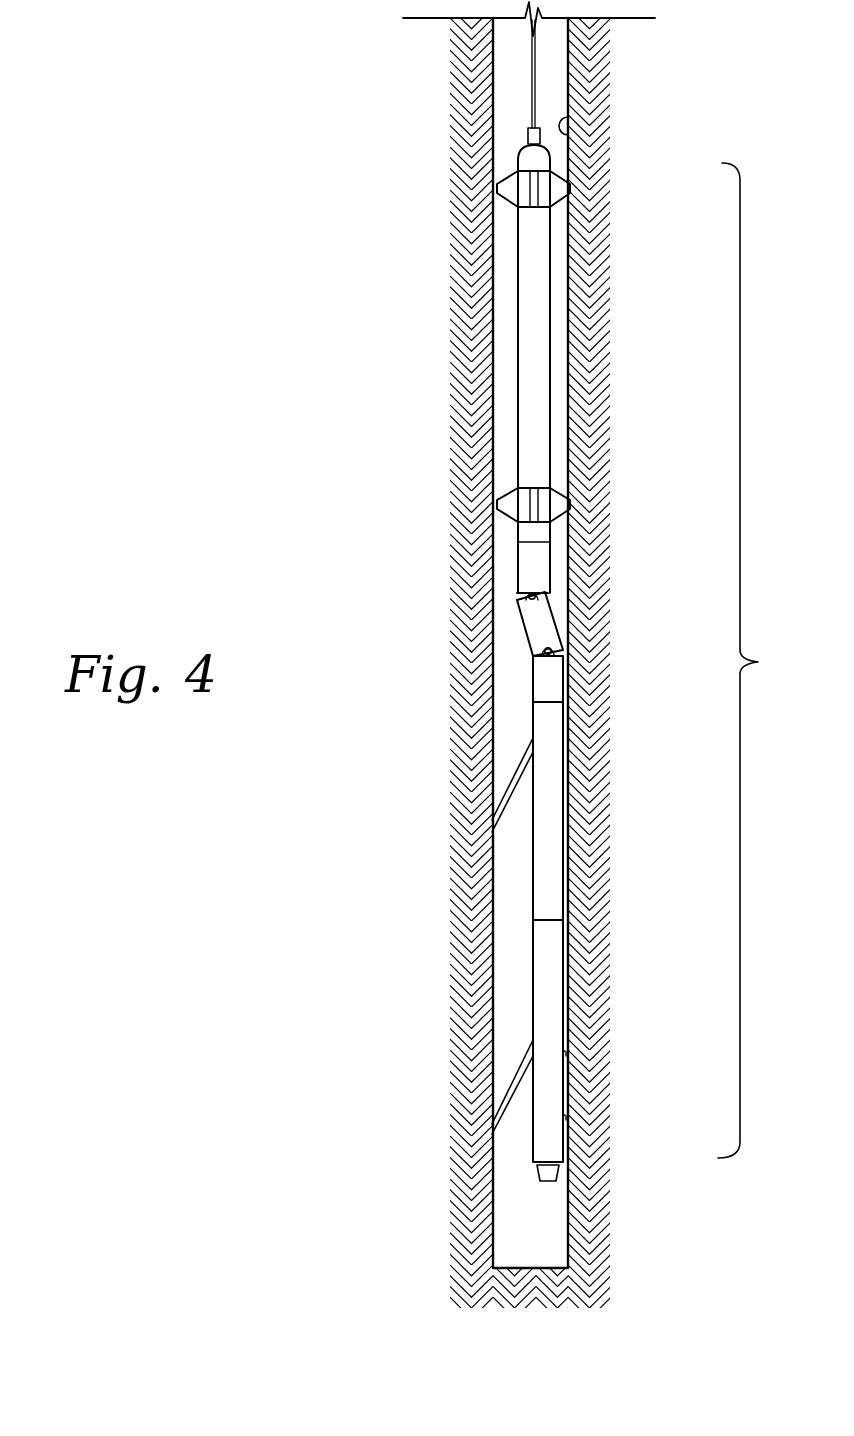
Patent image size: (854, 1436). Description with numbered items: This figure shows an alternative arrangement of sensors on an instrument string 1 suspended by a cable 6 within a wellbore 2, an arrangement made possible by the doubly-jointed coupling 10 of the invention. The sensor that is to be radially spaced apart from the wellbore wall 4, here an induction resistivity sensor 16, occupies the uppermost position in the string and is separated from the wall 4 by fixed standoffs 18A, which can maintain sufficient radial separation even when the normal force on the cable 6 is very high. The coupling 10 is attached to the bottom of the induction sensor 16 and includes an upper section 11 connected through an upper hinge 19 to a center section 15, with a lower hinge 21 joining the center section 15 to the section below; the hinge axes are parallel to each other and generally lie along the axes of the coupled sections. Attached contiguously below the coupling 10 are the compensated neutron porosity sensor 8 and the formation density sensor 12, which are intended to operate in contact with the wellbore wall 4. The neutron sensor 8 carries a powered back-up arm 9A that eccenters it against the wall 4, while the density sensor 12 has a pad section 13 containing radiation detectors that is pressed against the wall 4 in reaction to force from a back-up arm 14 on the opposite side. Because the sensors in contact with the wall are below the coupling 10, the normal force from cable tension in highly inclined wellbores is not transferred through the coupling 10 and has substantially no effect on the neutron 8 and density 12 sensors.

The instrument string 1 is at (748, 660).
The wellbore 2 is at (552, 90).
The wellbore wall 4 is at (567, 116).
The cable 6 is at (538, 62).
The compensated neutron porosity sensor 8 is at (548, 797).
The powered back-up arm 9A is at (515, 768).
The doubly-jointed coupling 10 is at (518, 630).
The upper section 11 is at (550, 565).
The formation density sensor 12 is at (548, 991).
The pad section 13 is at (565, 1088).
The back-up arm 14 is at (515, 1070).
The center section 15 is at (547, 623).
The induction resistivity sensor 16 is at (552, 333).
The standoff 18A is at (570, 186).
The upper hinge 19 is at (545, 593).
The lower hinge 21 is at (563, 653).